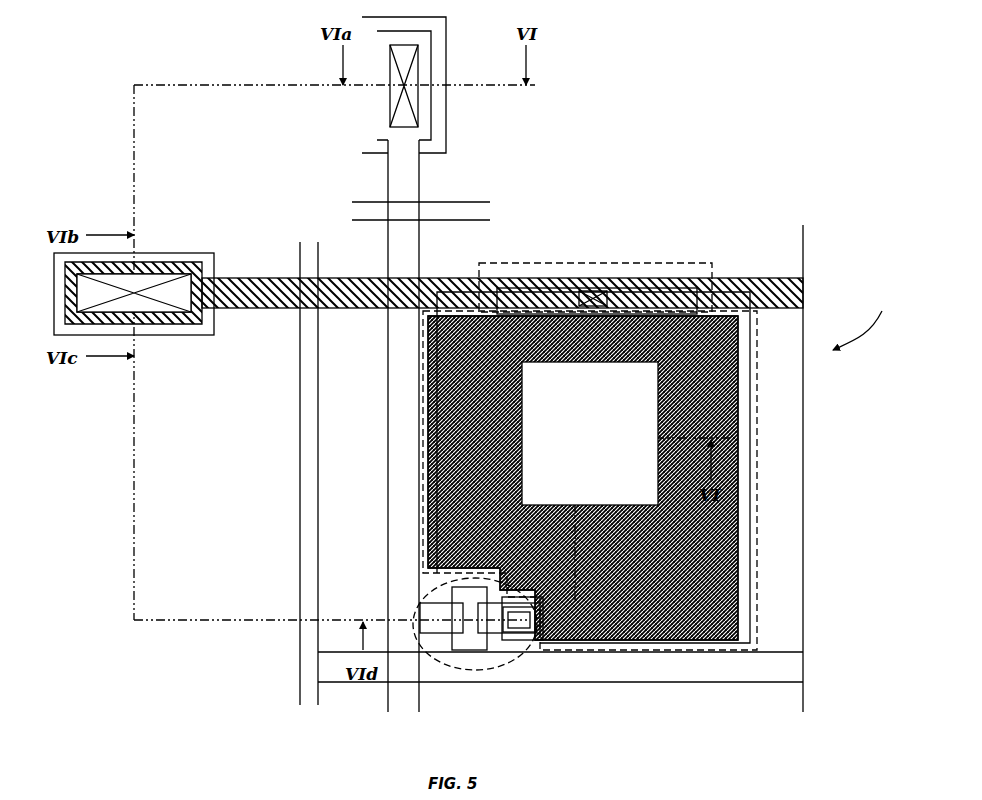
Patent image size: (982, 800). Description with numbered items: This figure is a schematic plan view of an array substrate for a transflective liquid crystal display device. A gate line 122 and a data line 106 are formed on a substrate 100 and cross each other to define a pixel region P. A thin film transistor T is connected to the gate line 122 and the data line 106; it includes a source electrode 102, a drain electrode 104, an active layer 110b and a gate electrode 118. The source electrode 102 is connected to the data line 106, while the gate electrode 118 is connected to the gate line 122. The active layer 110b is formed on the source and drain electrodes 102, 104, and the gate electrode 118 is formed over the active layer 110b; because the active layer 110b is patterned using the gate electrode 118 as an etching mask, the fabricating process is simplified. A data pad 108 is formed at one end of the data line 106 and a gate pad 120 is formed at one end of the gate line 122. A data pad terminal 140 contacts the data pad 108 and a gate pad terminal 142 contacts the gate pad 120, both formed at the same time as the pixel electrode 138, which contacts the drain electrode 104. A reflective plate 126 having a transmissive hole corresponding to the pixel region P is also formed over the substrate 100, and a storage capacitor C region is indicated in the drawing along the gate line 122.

The substrate 100 is at (857, 468).
The source electrode 102 is at (433, 628).
The drain electrode 104 is at (530, 645).
The data line 106 is at (388, 468).
The data pad 108 is at (432, 52).
The active layer 110b is at (440, 578).
The gate electrode 118 is at (370, 603).
The gate pad 120 is at (178, 324).
The gate line 122 is at (630, 665).
The reflective plate 126 is at (738, 562).
The pixel electrode 138 is at (748, 497).
The data pad terminal 140 is at (446, 30).
The gate pad terminal 142 is at (178, 253).
The storage capacitor C is at (657, 262).
The pixel region P is at (757, 423).
The thin film transistor T is at (487, 668).